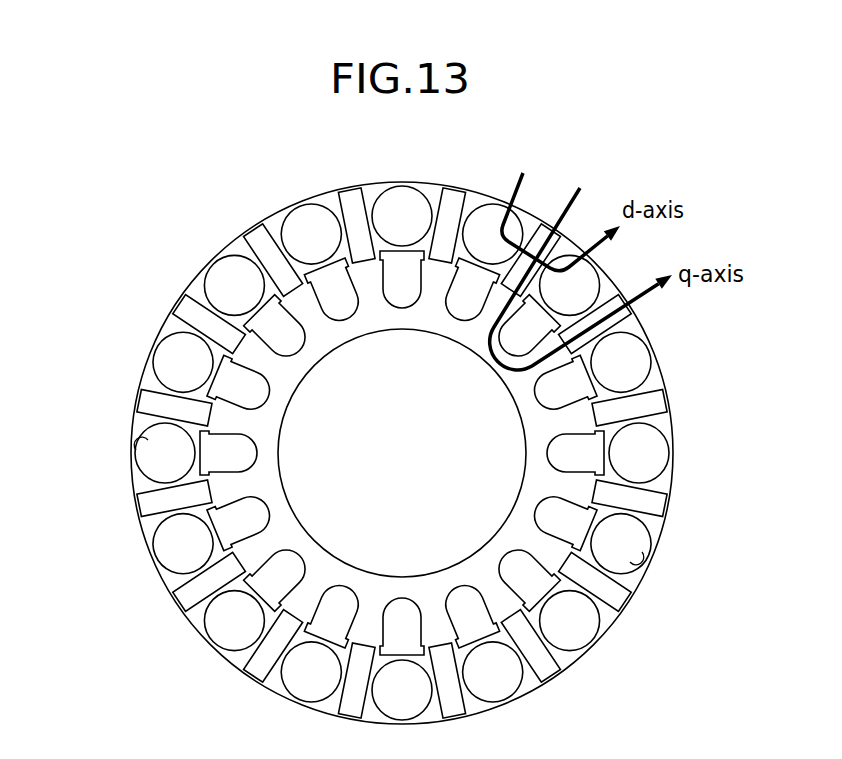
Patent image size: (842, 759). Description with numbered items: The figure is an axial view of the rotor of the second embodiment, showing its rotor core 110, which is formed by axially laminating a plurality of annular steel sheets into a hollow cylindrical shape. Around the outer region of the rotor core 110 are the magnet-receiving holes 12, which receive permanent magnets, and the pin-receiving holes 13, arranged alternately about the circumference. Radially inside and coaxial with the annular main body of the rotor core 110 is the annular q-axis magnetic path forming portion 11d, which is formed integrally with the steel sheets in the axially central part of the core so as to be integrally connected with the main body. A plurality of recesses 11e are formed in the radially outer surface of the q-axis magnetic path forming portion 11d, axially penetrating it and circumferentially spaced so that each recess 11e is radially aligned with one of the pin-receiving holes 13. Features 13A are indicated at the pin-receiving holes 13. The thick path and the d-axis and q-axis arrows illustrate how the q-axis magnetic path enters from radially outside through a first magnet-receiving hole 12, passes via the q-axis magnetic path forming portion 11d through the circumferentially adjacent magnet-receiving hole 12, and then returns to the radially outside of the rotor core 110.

The rotor core 110 is at (233, 237).
The q-axis magnetic path forming portion 11d is at (290, 378).
The recesses 11e is at (458, 307).
The magnet-receiving holes 12 is at (456, 204).
The pin-receiving holes 13 is at (472, 220).
The notch of circular hole 13A is at (140, 448).